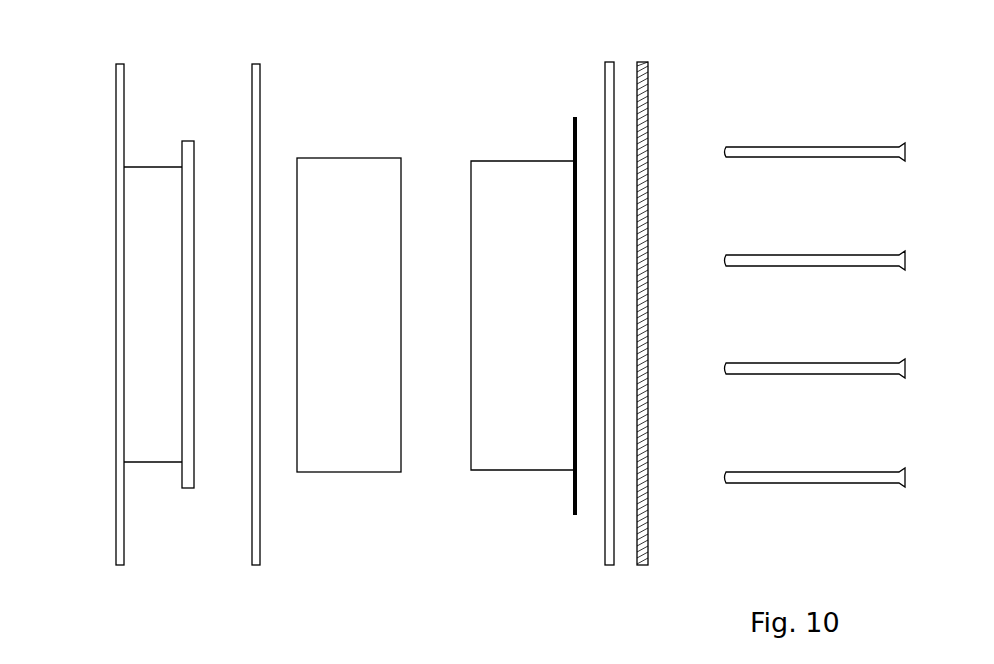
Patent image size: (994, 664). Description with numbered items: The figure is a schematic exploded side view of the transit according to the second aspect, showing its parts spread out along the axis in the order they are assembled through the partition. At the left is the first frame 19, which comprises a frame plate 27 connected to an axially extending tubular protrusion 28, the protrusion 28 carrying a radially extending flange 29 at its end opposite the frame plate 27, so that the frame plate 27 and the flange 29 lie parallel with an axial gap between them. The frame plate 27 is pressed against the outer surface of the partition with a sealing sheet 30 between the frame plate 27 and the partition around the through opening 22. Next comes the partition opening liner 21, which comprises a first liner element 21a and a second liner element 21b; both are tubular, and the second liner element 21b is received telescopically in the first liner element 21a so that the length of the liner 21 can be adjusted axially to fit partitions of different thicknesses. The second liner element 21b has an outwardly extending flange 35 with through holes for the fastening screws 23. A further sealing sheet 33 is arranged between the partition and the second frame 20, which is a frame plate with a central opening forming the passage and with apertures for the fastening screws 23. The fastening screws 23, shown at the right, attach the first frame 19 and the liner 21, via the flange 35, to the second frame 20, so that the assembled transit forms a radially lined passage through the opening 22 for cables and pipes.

The first frame 19 is at (108, 50).
The second frame 20 is at (648, 80).
The partition opening liner 21 is at (406, 88).
The first liner element 21a is at (335, 180).
The second liner element 21b is at (510, 177).
The through opening 22 is at (402, 661).
The fastening screws 23 is at (790, 150).
The frame plate 27 is at (116, 117).
The tubular protrusion 28 is at (152, 185).
The flange 29 is at (190, 490).
The sealing sheet 30 is at (252, 80).
The sealing sheet 33 is at (607, 63).
The flange 35 is at (574, 117).